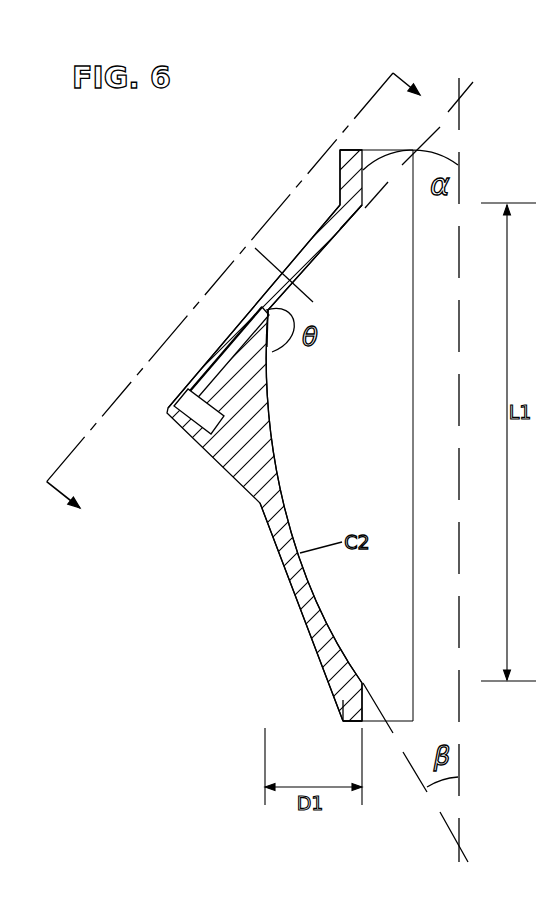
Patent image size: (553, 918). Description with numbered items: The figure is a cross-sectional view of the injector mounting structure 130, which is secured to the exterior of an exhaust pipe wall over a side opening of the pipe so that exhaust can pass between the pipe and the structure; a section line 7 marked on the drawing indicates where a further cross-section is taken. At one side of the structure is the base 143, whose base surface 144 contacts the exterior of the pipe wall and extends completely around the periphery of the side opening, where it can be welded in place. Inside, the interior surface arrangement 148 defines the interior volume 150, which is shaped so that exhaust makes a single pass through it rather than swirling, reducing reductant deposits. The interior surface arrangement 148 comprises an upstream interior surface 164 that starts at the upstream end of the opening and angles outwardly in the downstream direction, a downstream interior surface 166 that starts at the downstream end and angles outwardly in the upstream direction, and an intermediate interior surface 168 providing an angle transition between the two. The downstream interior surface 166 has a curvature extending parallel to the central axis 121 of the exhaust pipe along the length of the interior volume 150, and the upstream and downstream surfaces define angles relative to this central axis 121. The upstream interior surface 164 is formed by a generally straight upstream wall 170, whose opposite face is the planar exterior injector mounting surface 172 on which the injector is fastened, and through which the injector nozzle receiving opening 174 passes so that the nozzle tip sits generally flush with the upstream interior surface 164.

The section line 7- 7 is at (244, 299).
The central axis 121 is at (461, 111).
The injector mounting structure 130 is at (280, 558).
The base 143 is at (347, 149).
The base surface 144 is at (390, 457).
The interior surface arrangement 148 is at (288, 507).
The interior volume 150 is at (345, 437).
The upstream interior surface 164 is at (333, 247).
The downstream interior surface 166 is at (324, 611).
The intermediate interior surface 168 is at (269, 349).
The upstream wall 170 is at (330, 223).
The exterior injector mounting surface 172 is at (228, 340).
The injector nozzle receiving opening 174 is at (268, 300).